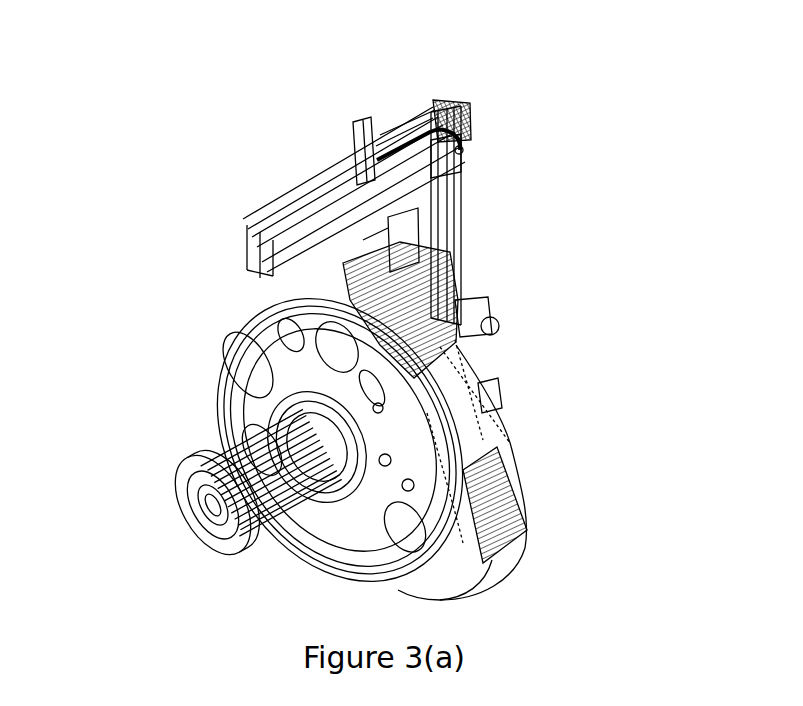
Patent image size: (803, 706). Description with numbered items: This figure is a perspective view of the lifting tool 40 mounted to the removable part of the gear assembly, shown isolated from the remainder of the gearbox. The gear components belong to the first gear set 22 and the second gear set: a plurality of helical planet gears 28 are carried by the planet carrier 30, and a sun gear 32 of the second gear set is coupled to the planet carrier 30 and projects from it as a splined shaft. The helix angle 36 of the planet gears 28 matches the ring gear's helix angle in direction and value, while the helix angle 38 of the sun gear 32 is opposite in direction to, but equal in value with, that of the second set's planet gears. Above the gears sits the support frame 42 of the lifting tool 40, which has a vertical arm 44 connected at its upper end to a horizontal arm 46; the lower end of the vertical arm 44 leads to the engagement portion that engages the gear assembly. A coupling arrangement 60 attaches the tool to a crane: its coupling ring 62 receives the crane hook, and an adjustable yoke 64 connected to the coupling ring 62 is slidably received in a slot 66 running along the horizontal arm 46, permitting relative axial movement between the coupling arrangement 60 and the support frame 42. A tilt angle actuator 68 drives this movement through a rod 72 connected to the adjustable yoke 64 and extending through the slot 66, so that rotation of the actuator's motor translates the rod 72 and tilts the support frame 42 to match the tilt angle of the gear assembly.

The first gear set 22 is at (138, 305).
The planet gears 28 is at (418, 311).
The planet carrier 30 is at (463, 423).
The sun gear 32 is at (207, 473).
The helix angle of the planet gears 36 is at (488, 557).
The helix angle of the sun gear 38 is at (271, 520).
The lifting tool 40 is at (212, 120).
The support frame 42 is at (648, 138).
The vertical arm 44 is at (453, 263).
The horizontal arm 46 is at (270, 215).
The coupling arrangement 60 is at (315, 92).
The coupling ring 62 is at (363, 133).
The adjustable yoke 64 is at (350, 171).
The slot 66 is at (403, 148).
The tilt angle actuator 68 is at (457, 112).
The rod 72 is at (458, 150).